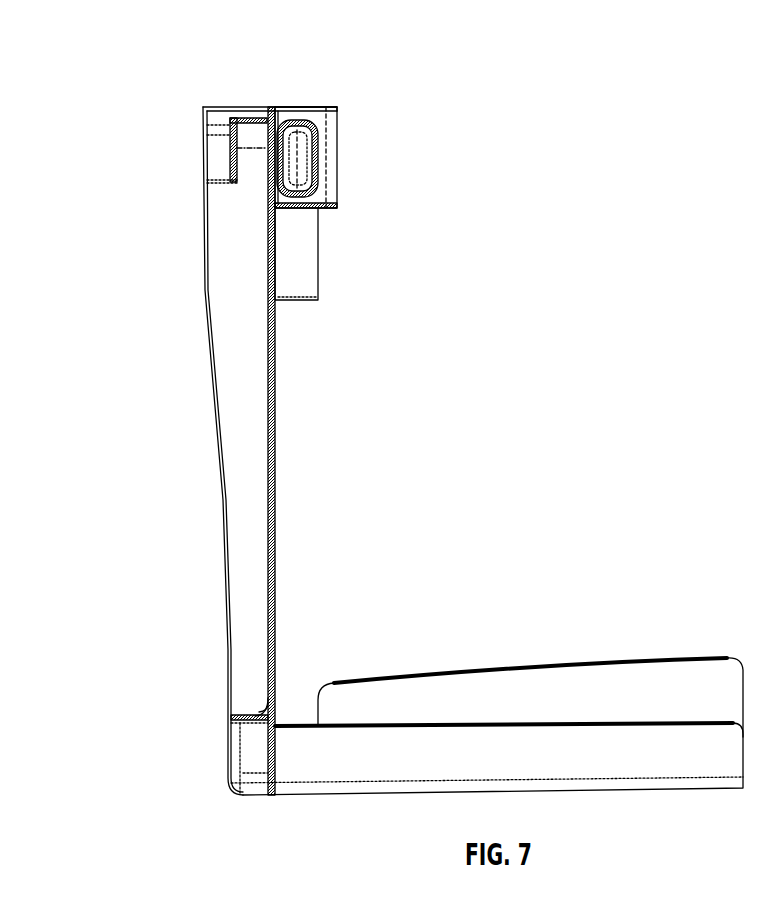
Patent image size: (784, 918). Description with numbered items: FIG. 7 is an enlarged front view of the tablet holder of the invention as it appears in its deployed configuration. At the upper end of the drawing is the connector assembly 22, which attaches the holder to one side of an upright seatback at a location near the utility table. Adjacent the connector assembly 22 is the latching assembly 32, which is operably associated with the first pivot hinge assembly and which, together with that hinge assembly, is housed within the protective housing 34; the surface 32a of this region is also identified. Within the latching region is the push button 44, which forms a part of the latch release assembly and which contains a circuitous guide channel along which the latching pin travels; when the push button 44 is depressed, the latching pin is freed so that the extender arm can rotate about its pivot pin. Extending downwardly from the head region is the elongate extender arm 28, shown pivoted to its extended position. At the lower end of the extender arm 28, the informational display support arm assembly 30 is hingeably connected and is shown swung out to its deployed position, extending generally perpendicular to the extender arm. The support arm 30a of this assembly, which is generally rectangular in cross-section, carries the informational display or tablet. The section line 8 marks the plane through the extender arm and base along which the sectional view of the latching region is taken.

The section line 8- 8 is at (278, 107).
The connector assembly 22 is at (303, 255).
The elongate extender arm 28 is at (240, 443).
The informational display support arm assembly 30 is at (383, 795).
The support arm 30a is at (648, 755).
The latching assembly 32 is at (352, 131).
The top surface of head portion 32a is at (315, 106).
The protective housing 34 is at (222, 105).
The push button 44 is at (300, 163).